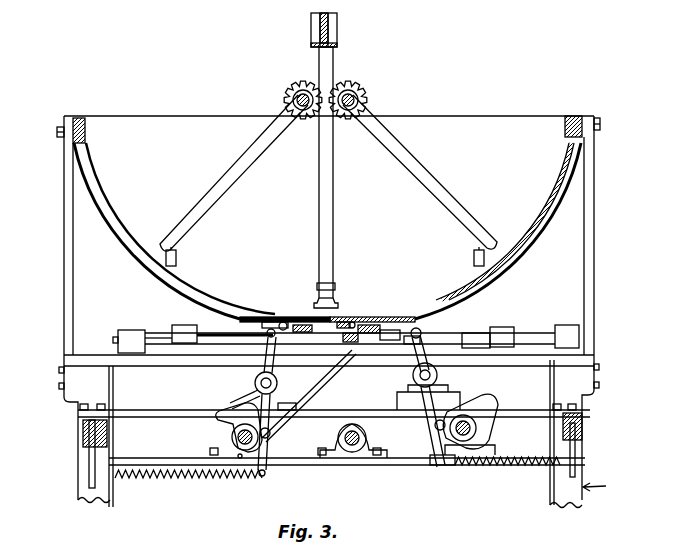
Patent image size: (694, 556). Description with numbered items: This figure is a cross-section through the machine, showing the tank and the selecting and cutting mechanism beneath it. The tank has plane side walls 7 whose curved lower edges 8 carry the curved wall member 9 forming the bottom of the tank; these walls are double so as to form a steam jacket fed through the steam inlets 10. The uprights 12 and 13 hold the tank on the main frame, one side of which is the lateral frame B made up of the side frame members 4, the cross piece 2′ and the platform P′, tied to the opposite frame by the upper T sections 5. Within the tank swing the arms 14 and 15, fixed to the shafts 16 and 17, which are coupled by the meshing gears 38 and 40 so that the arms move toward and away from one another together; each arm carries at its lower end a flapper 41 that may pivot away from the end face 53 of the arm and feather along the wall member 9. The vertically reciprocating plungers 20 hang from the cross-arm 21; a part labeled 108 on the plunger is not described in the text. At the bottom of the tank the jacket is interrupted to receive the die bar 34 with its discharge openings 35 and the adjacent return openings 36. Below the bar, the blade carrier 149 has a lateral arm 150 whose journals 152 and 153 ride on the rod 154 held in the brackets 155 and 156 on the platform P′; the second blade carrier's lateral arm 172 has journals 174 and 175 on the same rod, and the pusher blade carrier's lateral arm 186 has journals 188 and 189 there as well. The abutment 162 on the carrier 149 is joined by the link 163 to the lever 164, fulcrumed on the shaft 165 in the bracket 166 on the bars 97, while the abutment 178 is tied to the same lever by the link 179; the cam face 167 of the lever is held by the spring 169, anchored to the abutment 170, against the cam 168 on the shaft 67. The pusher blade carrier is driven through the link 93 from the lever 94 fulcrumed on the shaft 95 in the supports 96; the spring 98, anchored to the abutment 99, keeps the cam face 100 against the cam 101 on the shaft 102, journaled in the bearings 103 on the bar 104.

The cross-arm 21 is at (336, 28).
The plunger 20 is at (322, 168).
The gear 40 is at (304, 80).
The gear 38 is at (350, 82).
The shaft 17 is at (292, 97).
The shaft 16 is at (362, 96).
The swinging arm 15 is at (218, 172).
The swinging arm 14 is at (455, 188).
The flapper 41 is at (178, 256).
The side wall 7 is at (329, 138).
The curved lower edge 8 is at (80, 158).
The curved wall member 9 is at (95, 207).
The steam inlet 10 is at (175, 293).
The lower end of arm 53 is at (148, 270).
The upright 13 is at (63, 260).
The upright 12 is at (596, 252).
The platform P′ is at (100, 358).
The upper T section 5 is at (86, 423).
The side frame member 4 is at (80, 490).
The abutment 170 is at (90, 455).
The abutment 99 is at (576, 447).
The lateral frame B is at (605, 490).
The lever 164 is at (262, 362).
The journal 152 is at (195, 350).
The rod 154 is at (157, 345).
The bracket 155 is at (148, 317).
The lateral arm 150 is at (198, 315).
The journal 175 is at (488, 318).
The journal 189 is at (528, 318).
The bracket 156 is at (574, 313).
The link 163 is at (268, 318).
The blade carrier 149 is at (283, 320).
The return opening 36 is at (312, 328).
The collar 108 is at (320, 280).
The discharge opening 35 is at (347, 320).
The journal 174 is at (370, 322).
The die bar 34 is at (366, 306).
The link 93 is at (385, 330).
The journal 153 is at (343, 340).
The lateral arm 186 is at (410, 336).
The lateral arm 172 is at (418, 328).
The journal 188 is at (410, 362).
The lever 94 is at (437, 371).
The support 96 is at (405, 392).
The bar 97 is at (372, 426).
The shaft 95 is at (433, 400).
The bar 104 is at (437, 470).
The cam 101 is at (480, 404).
The shaft 102 is at (476, 428).
The bearing 103 is at (494, 450).
The cam face 100 is at (444, 468).
The spring 98 is at (523, 467).
The abutment 162 is at (280, 352).
The bracket 166 is at (255, 385).
The shaft 165 is at (232, 405).
The cam 168 is at (230, 430).
The abutment 178 is at (322, 378).
The link 179 is at (285, 422).
The cam face 167 is at (257, 470).
The cross piece 2′ is at (263, 476).
The spring 169 is at (148, 476).
The shaft 67 is at (236, 460).